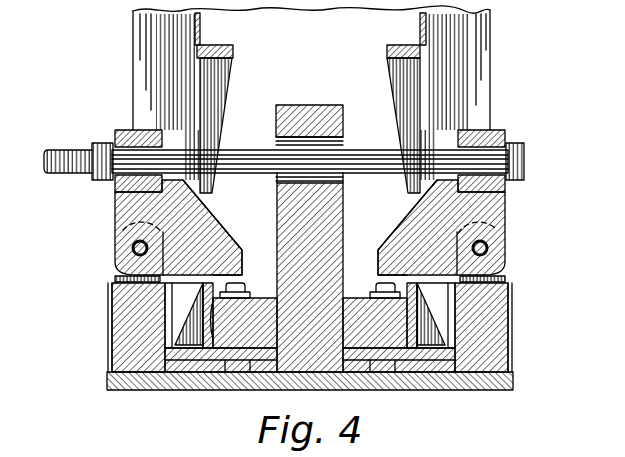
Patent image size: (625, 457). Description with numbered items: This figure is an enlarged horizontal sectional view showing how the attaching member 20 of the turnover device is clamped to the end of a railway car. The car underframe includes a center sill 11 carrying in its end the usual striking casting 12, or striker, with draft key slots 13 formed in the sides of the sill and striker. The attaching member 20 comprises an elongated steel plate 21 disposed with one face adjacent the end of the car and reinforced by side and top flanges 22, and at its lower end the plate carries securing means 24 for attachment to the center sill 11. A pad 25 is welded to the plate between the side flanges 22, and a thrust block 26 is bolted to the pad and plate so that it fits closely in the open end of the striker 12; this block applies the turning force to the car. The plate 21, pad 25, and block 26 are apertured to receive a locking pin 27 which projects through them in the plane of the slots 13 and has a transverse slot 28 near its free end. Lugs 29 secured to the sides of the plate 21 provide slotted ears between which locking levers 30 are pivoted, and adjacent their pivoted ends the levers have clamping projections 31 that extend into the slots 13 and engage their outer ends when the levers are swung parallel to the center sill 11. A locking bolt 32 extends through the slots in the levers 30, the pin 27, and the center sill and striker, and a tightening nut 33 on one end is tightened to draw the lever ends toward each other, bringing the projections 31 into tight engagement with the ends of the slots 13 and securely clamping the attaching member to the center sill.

The center sill 11 is at (142, 22).
The striking casting 12 is at (205, 290).
The draft key slots 13 is at (208, 81).
The attaching member 20 is at (142, 392).
The elongated steel plate 21 is at (188, 378).
The side and top flanges 22 is at (110, 347).
The securing means 24 is at (114, 248).
The pad 25 is at (416, 356).
The thrust block 26 is at (351, 298).
The locking pin 27 is at (285, 208).
The transverse slot 28 is at (278, 144).
The lugs 29 is at (130, 323).
The locking levers 30 is at (118, 188).
The clamping projections 31 is at (222, 243).
The locking bolt 32 is at (357, 149).
The tightening nut 33 is at (104, 143).